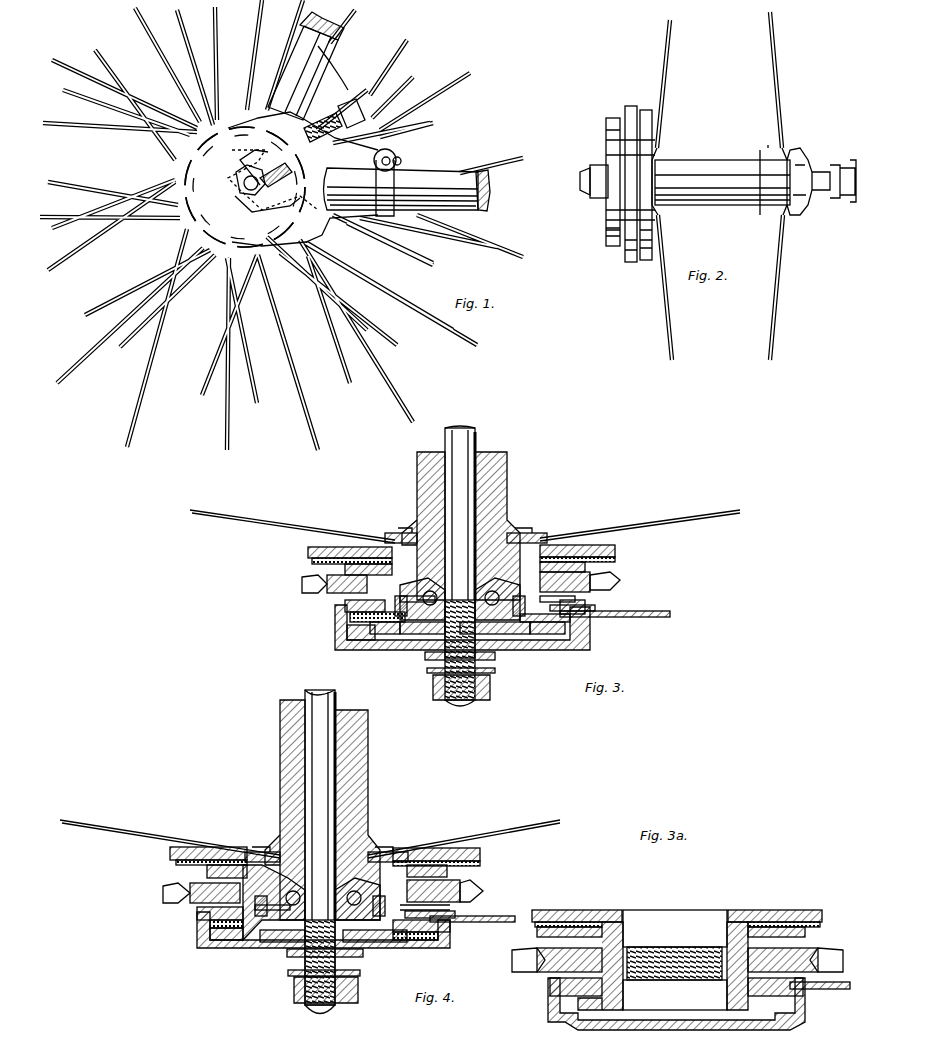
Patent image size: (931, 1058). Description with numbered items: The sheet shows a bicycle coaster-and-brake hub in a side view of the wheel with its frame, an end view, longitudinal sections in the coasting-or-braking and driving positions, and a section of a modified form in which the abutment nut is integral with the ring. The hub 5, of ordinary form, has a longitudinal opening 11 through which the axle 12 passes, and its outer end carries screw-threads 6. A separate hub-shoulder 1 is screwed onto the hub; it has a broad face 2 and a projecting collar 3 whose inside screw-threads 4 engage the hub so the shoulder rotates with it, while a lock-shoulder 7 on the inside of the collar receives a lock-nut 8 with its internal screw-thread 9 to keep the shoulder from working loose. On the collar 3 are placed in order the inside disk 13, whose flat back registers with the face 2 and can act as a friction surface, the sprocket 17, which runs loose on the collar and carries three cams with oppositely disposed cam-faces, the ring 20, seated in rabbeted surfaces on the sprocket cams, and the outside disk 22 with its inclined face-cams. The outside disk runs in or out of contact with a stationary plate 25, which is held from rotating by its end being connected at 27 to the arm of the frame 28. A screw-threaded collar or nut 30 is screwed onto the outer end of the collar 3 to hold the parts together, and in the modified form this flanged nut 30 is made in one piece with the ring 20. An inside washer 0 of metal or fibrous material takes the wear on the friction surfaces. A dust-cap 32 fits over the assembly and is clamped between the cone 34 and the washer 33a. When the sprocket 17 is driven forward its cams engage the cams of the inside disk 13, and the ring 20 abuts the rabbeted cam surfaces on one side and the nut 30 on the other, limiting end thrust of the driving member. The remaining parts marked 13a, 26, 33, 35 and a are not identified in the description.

In FIG. 3, the inside washer 0 is at (600, 548).
In FIG. 4, the inside washer 0 is at (178, 858).
In FIG. 3, the hub-shoulder 1 is at (615, 552).
In FIG. 4, the hub-shoulder 1 is at (480, 858).
In FIG. 3A, the hub-shoulder 1 is at (808, 912).
In FIG. 3, the broad face 2 is at (615, 560).
In FIG. 4, the broad face 2 is at (480, 866).
In FIG. 3A, the broad face 2 is at (820, 925).
In FIG. 3, the projecting collar 3 is at (380, 620).
In FIG. 4, the projecting collar 3 is at (430, 936).
In FIG. 3, the screw-threads 4 is at (510, 555).
In FIG. 4, the screw-threads 4 is at (385, 870).
In FIG. 2, the hub 5 is at (715, 168).
In FIG. 3, the hub 5 is at (505, 495).
In FIG. 4, the hub 5 is at (368, 770).
In FIG. 3, the screw-threads 6 is at (520, 634).
In FIG. 4, the screw-threads 6 is at (385, 942).
In FIG. 3, the lock-shoulder 7 is at (535, 634).
In FIG. 3, the lock-nut 8 is at (400, 612).
In FIG. 4, the lock-nut 8 is at (260, 915).
In FIG. 3, the screw-thread 9 is at (415, 612).
In FIG. 4, the screw-thread 9 is at (275, 912).
In FIG. 3, the longitudinal opening 11 is at (485, 470).
In FIG. 4, the longitudinal opening 11 is at (345, 738).
In FIG. 3, the axle 12 is at (477, 436).
In FIG. 4, the axle 12 is at (337, 712).
In FIG. 3, the inside disk 13 is at (585, 570).
In FIG. 4, the inside disk 13 is at (447, 875).
In FIG. 3A, the inside disk 13 is at (537, 933).
In FIG. 3, the ring 13a is at (565, 545).
In FIG. 3, the sprocket 17 is at (618, 585).
In FIG. 4, the sprocket 17 is at (483, 893).
In FIG. 3A, the sprocket 17 is at (832, 958).
In FIG. 3, the ring 20 is at (575, 600).
In FIG. 4, the ring 20 is at (450, 907).
In FIG. 3, the outside disk 22 is at (595, 606).
In FIG. 4, the outside disk 22 is at (455, 914).
In FIG. 3A, the outside disk 22 is at (550, 983).
In FIG. 1, the stationary plate 25 is at (362, 152).
In FIG. 3, the stationary plate 25 is at (665, 617).
In FIG. 4, the stationary plate 25 is at (498, 925).
In FIG. 3A, the stationary plate 25 is at (830, 990).
In FIG. 4, the ring 26 is at (218, 925).
In FIG. 1, the connection 27 is at (398, 155).
In FIG. 1, the frame arm 28 is at (445, 175).
In FIG. 3, the screw-threaded collar or nut 30 is at (375, 640).
In FIG. 4, the screw-threaded collar or nut 30 is at (240, 935).
In FIG. 3A, the screw-threaded collar or nut 30 is at (762, 1012).
In FIG. 1, the dust-cap 32 is at (268, 233).
In FIG. 3, the dust-cap 32 is at (340, 630).
In FIG. 4, the dust-cap 32 is at (200, 935).
In FIG. 3A, the dust-cap 32 is at (612, 1028).
In FIG. 3, the nut 33 is at (478, 690).
In FIG. 4, the nut 33 is at (352, 990).
In FIG. 3, the washer 33a is at (490, 672).
In FIG. 4, the washer 33a is at (290, 974).
In FIG. 3, the cone 34 is at (480, 660).
In FIG. 4, the cone 34 is at (362, 957).
In FIG. 3, the ring 35 is at (540, 540).
In FIG. 3, the gap a is at (340, 603).